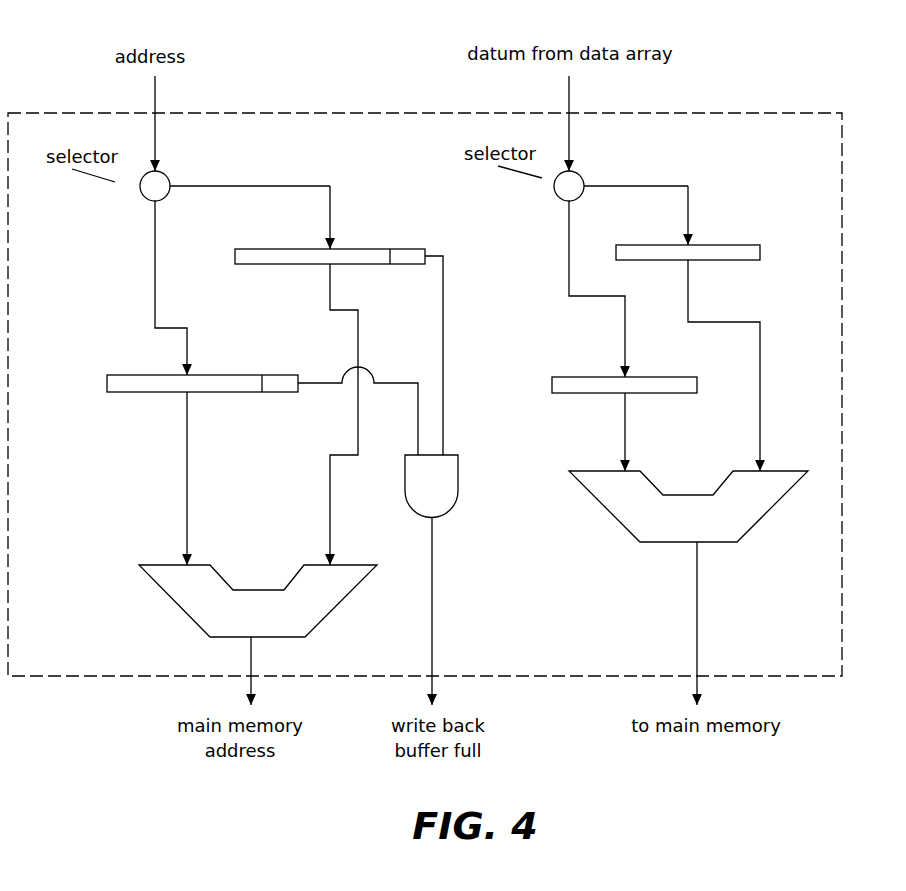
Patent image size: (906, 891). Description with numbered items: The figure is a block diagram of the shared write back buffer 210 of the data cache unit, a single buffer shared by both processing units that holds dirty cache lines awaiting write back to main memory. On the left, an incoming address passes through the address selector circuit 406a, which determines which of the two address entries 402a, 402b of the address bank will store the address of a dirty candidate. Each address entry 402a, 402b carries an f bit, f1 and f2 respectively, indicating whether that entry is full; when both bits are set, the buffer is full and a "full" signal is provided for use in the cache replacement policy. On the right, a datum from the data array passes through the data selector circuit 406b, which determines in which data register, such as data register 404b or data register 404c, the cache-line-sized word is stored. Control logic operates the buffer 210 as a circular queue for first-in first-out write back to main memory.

The shared write back buffer 210 is at (775, 58).
The address selector circuit 406a is at (165, 172).
The data selector circuit 406b is at (582, 173).
The address entry 402a is at (277, 265).
The address entry 402b is at (203, 373).
The data register 404b is at (642, 375).
The data register 404c is at (723, 262).